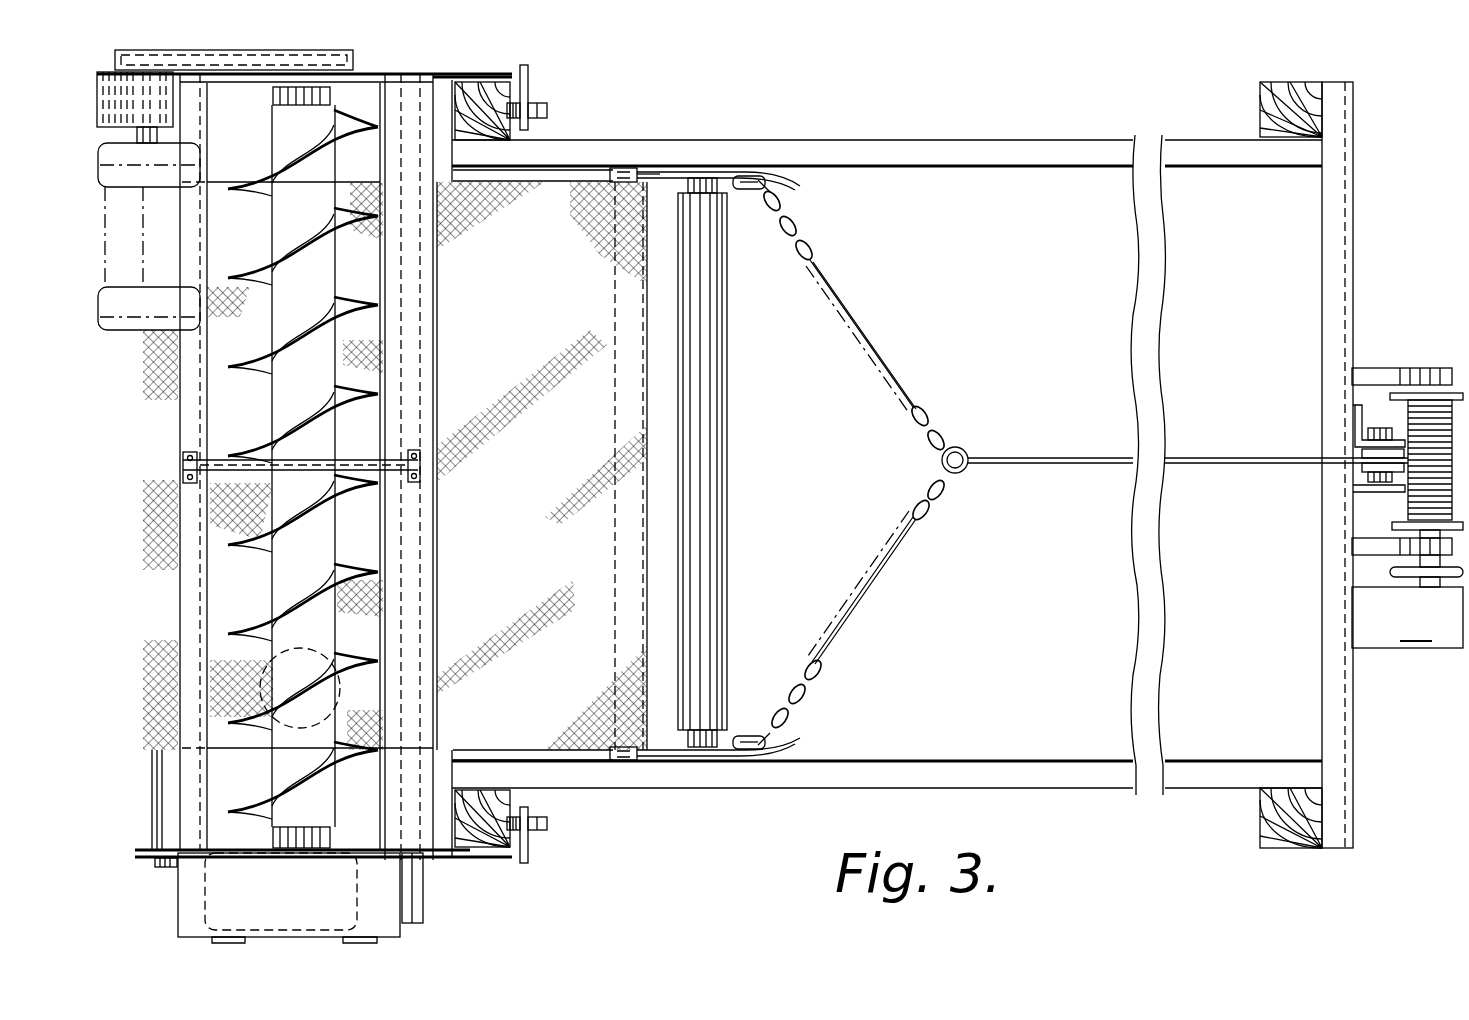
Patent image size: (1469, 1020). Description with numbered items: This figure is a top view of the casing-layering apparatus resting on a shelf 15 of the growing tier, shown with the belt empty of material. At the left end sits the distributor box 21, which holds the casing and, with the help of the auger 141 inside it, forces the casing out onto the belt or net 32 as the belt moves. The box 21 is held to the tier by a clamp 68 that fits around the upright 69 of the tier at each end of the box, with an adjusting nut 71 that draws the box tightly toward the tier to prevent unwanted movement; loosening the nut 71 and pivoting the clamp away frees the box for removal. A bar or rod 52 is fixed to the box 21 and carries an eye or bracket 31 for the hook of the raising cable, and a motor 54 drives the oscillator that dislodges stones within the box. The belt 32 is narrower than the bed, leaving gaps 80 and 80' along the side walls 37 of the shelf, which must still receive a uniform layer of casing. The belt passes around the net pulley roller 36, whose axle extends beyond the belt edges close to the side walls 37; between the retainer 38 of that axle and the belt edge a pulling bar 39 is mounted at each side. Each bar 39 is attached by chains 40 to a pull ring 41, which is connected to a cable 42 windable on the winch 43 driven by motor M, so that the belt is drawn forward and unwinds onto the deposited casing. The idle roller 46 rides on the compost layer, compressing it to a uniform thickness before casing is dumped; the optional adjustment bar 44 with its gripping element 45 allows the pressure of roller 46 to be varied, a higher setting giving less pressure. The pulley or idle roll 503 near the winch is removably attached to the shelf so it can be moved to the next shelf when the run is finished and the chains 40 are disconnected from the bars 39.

The shelf 15 is at (856, 136).
The distributor box 21 is at (145, 832).
The eye or bracket 31 is at (322, 458).
The belt or net 32 is at (533, 361).
The net pulley roller 36 is at (650, 190).
The side walls 37 is at (1062, 152).
The retainer 38 is at (623, 168).
The pulling bar 39 is at (707, 753).
The chains 40 is at (918, 404).
The pull ring 41 is at (941, 462).
The cable 42 is at (1052, 462).
The winch 43 is at (1461, 402).
The adjustment bar 44 is at (778, 184).
The gripping element 45 is at (752, 192).
The idle roller 46 is at (708, 535).
The bar or rod 52 is at (420, 478).
The motor 54 is at (395, 930).
The clamp 68 is at (523, 66).
The upright 69 is at (467, 823).
The adjusting nut 71 is at (546, 110).
The gap 80 is at (533, 731).
The gap 80' is at (533, 204).
The auger 141 is at (286, 233).
The pulley or idle roll 503 is at (1360, 454).